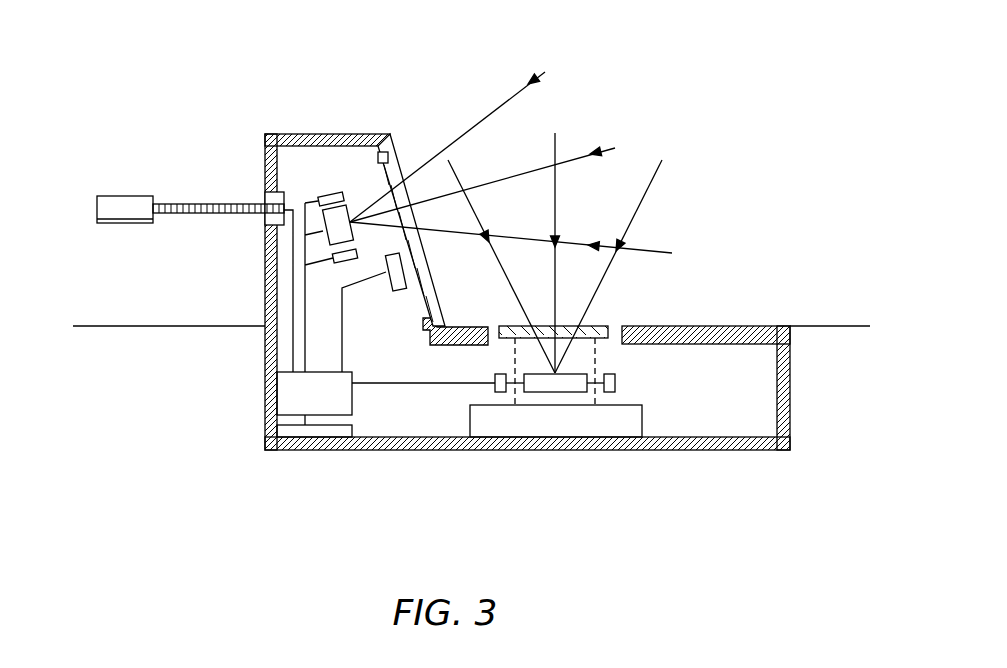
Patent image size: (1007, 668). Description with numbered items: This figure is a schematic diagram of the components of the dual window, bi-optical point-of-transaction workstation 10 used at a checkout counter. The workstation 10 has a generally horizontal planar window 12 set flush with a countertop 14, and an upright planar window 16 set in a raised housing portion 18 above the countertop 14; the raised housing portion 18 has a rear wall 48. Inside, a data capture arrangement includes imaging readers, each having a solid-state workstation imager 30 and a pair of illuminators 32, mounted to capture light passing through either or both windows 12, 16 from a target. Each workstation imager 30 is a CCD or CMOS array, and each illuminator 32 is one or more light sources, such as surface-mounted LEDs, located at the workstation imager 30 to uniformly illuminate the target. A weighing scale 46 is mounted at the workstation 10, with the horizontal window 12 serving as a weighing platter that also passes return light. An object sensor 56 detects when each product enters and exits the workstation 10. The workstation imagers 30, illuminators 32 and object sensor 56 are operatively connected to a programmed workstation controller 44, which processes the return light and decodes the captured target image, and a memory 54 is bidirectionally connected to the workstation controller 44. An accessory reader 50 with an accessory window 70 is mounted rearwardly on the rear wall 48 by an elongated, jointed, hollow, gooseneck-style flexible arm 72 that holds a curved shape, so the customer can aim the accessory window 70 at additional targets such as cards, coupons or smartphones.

The point-of-transaction workstation 10 is at (731, 268).
The generally horizontal planar window 12 is at (590, 326).
The countertop 14 is at (165, 326).
The upright planar window 16 is at (397, 163).
The raised housing portion 18 is at (323, 134).
The workstation imager 30 is at (324, 240).
The illuminator 32 is at (707, 465).
The workstation controller 44 is at (298, 402).
The weighing scale 46 is at (477, 420).
The rear wall 48 is at (266, 176).
The accessory reader 50 is at (139, 182).
The memory 54 is at (288, 432).
The object sensor 56 is at (401, 290).
The accessory window 70 is at (102, 223).
The flexible arm 72 is at (162, 214).